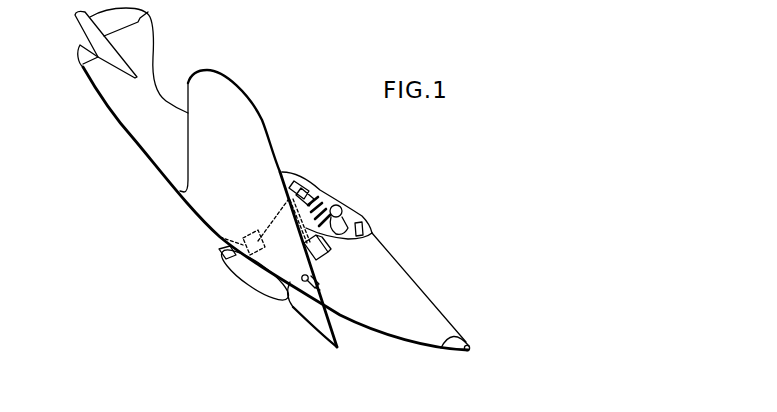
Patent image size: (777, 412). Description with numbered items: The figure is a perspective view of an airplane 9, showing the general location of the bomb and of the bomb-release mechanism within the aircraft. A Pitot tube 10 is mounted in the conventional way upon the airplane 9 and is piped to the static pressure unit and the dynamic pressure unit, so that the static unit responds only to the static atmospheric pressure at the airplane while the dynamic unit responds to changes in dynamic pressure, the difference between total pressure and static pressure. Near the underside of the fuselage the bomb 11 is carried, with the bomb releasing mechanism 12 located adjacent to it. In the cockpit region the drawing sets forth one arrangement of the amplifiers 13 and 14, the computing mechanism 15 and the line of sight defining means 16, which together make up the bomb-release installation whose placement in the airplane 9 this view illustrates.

The airplane 9 is at (437, 313).
The Pitot tube 10 is at (293, 307).
The pod 11 is at (267, 292).
The bomb releasing mechanism 12 is at (220, 237).
The amplifier 13 is at (301, 184).
The amplifier 14 is at (319, 199).
The computing mechanism 15 is at (331, 202).
The line of sight defining means 16 is at (363, 229).